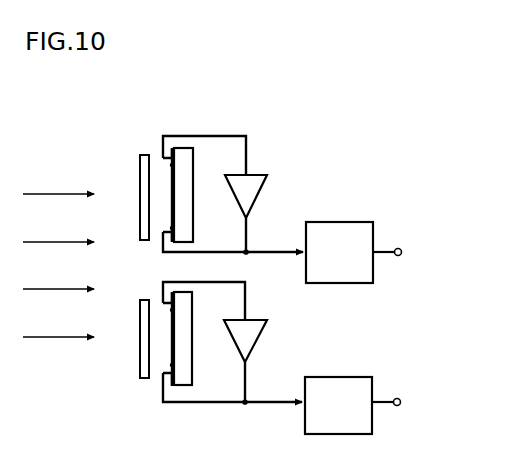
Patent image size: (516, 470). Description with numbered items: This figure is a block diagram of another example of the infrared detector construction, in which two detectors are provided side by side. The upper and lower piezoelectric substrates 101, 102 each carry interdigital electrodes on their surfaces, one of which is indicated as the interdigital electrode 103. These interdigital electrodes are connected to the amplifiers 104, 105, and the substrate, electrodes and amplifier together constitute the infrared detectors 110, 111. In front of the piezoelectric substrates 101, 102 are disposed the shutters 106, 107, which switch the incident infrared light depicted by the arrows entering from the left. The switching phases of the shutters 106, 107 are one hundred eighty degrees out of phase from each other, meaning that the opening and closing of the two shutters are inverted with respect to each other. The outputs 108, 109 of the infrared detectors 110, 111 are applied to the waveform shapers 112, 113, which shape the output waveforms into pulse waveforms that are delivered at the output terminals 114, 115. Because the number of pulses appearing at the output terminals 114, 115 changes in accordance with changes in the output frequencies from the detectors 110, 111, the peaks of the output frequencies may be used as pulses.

The piezoelectric substrate 101 is at (186, 152).
The piezoelectric substrate 102 is at (183, 383).
The interdigital electrode 103 is at (172, 150).
The amplifier 104 is at (252, 180).
The amplifier 105 is at (255, 322).
The shutter 106 is at (143, 154).
The shutter 107 is at (143, 378).
The output 108 is at (247, 251).
The output 109 is at (246, 401).
The infrared detector 110 is at (322, 124).
The infrared detector 111 is at (262, 342).
The waveform shaper 112 is at (347, 225).
The waveform shaper 113 is at (347, 378).
The output terminal 114 is at (402, 249).
The output terminal 115 is at (401, 398).